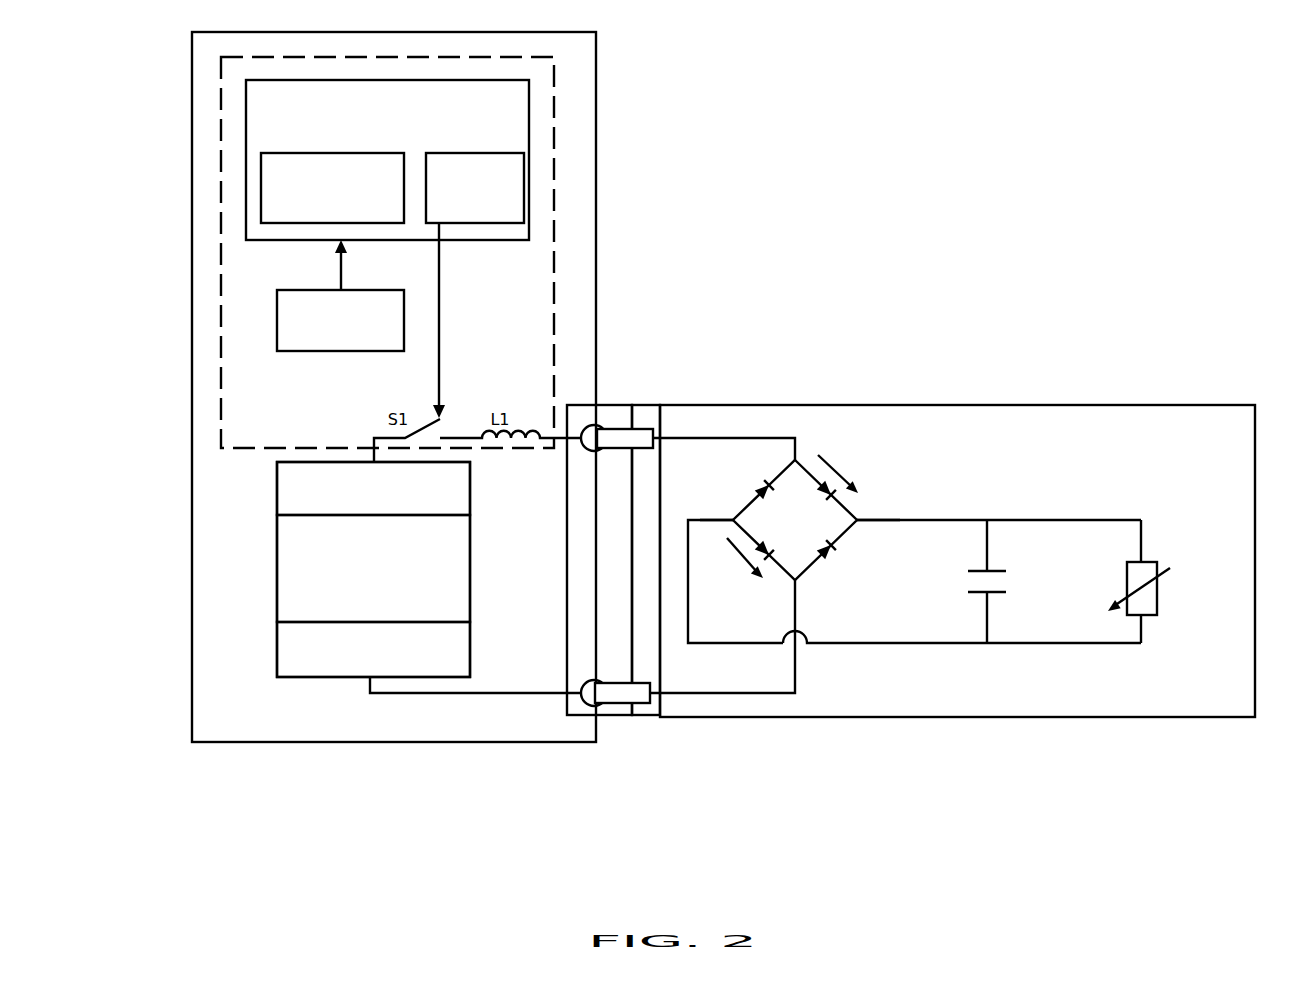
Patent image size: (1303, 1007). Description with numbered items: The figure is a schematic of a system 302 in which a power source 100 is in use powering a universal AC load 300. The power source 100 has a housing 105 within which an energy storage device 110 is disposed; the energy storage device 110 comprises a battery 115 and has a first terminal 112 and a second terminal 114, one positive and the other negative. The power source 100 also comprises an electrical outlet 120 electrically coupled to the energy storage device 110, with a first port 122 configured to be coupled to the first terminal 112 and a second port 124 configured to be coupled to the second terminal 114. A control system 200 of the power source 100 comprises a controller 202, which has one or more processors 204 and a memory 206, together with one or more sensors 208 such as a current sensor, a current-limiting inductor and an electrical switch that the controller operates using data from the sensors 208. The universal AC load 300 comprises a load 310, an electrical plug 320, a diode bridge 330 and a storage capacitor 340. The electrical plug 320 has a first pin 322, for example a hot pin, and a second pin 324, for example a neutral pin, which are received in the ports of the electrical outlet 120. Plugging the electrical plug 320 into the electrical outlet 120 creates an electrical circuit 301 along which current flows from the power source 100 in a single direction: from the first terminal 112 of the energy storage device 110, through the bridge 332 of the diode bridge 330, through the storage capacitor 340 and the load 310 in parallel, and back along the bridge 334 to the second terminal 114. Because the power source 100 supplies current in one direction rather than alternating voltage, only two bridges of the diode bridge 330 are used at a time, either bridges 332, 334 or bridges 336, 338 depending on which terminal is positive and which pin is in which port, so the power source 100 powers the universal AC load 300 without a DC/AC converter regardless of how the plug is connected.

The power source 100 is at (222, 344).
The housing 105 is at (506, 609).
The energy storage device 110 is at (357, 606).
The first terminal 112 is at (357, 511).
The second terminal 114 is at (357, 672).
The battery 115 is at (379, 645).
The electrical outlet 120 is at (549, 581).
The first port 122 is at (596, 427).
The second port 124 is at (602, 708).
The control system 200 is at (281, 427).
The controller 202 is at (371, 138).
The processors 204 is at (316, 210).
The memory 206 is at (459, 210).
The sensors 208 is at (325, 342).
The universal AC load 300 is at (879, 402).
The electrical circuit 301 is at (1031, 442).
The system 302 is at (903, 205).
The load 310 is at (1163, 581).
The electrical plug 320 is at (696, 555).
The first pin 322 is at (617, 442).
The second pin 324 is at (627, 693).
The diode bridge 330 is at (843, 494).
The bridge 332 is at (848, 513).
The bridge 334 is at (782, 570).
The bridge 336 is at (840, 537).
The bridge 338 is at (747, 500).
The storage capacitor 340 is at (1028, 581).